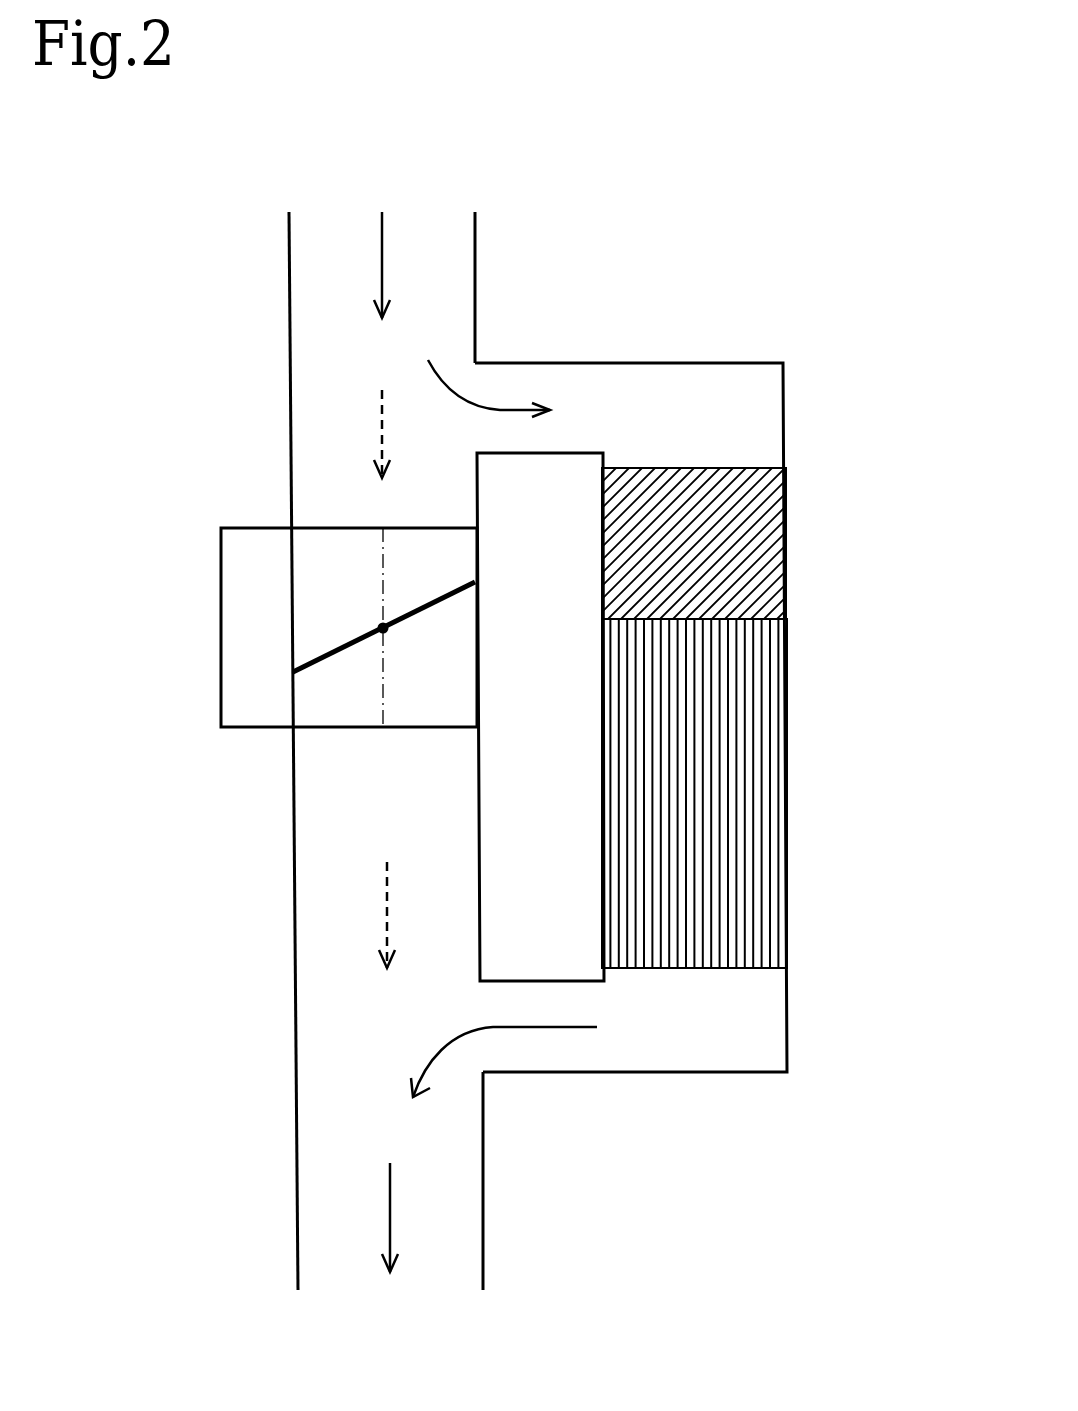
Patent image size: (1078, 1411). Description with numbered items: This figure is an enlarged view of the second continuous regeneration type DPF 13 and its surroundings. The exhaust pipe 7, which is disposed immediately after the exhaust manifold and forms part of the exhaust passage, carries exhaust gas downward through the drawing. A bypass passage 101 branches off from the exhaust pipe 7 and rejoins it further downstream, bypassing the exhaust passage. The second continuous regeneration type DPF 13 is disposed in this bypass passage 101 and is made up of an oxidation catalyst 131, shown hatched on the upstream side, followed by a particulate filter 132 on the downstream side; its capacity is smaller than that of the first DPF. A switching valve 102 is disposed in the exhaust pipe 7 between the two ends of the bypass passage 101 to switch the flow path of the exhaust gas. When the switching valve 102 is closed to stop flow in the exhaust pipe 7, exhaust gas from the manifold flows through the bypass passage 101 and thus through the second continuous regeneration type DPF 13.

The exhaust pipe 7 is at (465, 1214).
The bypass passage 101 is at (655, 372).
The switching valve 102 is at (221, 687).
The second continuous regeneration type DPF 13 is at (702, 768).
The oxidation catalyst 131 is at (770, 560).
The particulate filter 132 is at (773, 852).